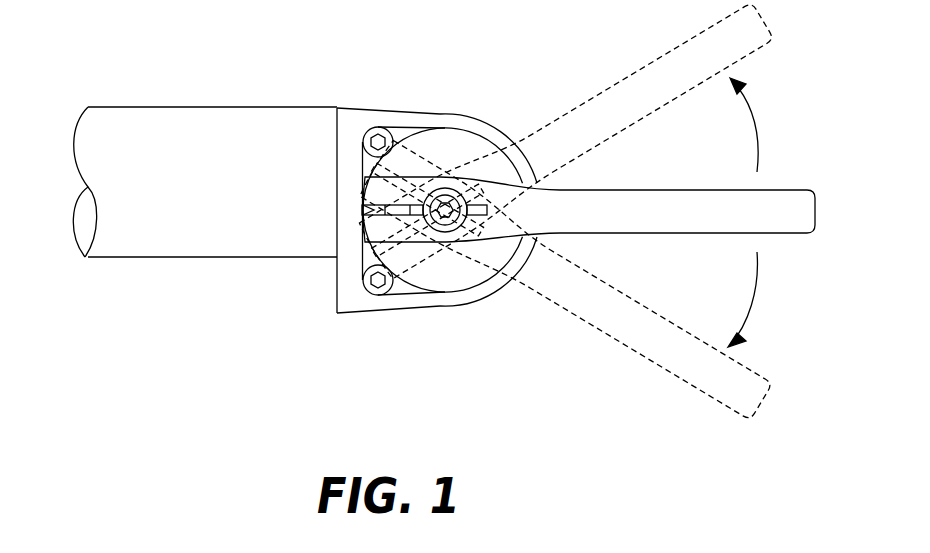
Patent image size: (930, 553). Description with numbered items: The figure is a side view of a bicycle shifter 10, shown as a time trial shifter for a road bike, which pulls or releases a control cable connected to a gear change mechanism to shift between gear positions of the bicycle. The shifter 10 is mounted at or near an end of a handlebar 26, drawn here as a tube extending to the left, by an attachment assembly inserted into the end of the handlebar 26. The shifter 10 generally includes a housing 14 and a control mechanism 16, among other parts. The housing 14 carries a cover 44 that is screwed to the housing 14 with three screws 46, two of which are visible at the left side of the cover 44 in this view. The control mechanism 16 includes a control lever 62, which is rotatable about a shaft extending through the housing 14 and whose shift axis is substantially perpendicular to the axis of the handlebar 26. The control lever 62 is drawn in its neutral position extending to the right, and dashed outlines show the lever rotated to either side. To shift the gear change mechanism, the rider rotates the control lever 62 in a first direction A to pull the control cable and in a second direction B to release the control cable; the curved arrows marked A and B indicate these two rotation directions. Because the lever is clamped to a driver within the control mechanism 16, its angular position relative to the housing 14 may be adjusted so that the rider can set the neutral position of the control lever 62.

The bicycle shifter 10 is at (508, 86).
The housing 14 is at (362, 312).
The control mechanism 16 is at (583, 340).
The handlebar 26 is at (205, 260).
The cover 44 is at (468, 296).
The screws 46 is at (382, 130).
The control lever 62 is at (665, 237).
The first direction A is at (746, 118).
The second direction B is at (744, 304).